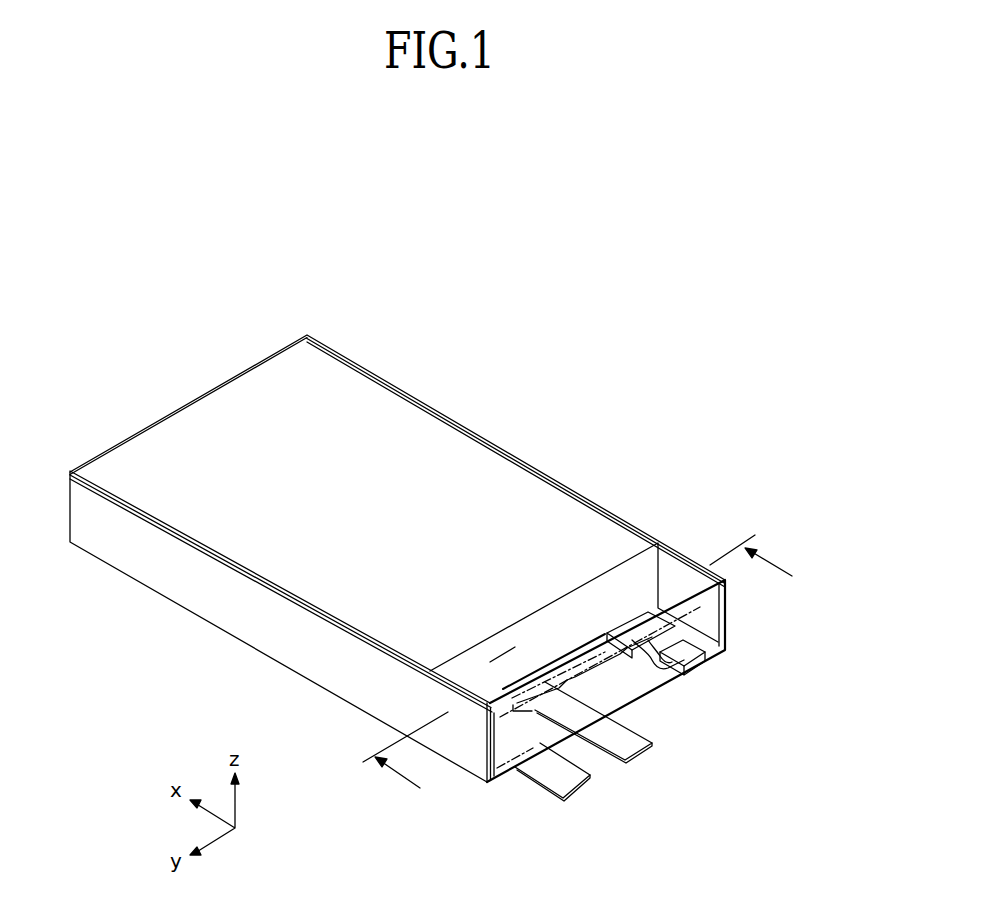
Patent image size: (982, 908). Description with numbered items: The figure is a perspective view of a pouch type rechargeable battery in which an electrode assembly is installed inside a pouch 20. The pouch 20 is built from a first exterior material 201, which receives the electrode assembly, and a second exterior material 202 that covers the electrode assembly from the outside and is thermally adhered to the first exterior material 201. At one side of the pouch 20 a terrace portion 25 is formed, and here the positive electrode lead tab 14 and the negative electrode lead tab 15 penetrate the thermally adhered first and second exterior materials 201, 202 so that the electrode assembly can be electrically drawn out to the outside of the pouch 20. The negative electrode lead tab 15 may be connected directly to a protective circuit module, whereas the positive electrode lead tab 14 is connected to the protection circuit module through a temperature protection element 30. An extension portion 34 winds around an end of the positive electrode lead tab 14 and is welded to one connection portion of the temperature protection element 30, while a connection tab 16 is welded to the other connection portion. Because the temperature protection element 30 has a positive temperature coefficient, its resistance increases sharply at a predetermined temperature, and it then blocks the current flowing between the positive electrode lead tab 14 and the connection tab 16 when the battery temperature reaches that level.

The pouch 20 is at (143, 683).
The first exterior material 201 is at (246, 510).
The second exterior material 202 is at (222, 597).
The terrace portion 25 is at (540, 733).
The connection tab 16 is at (632, 747).
The negative electrode lead tab 15 is at (557, 777).
The extension portion 34 is at (672, 642).
The positive electrode lead tab 14 is at (685, 658).
The temperature protection element 30 is at (647, 700).